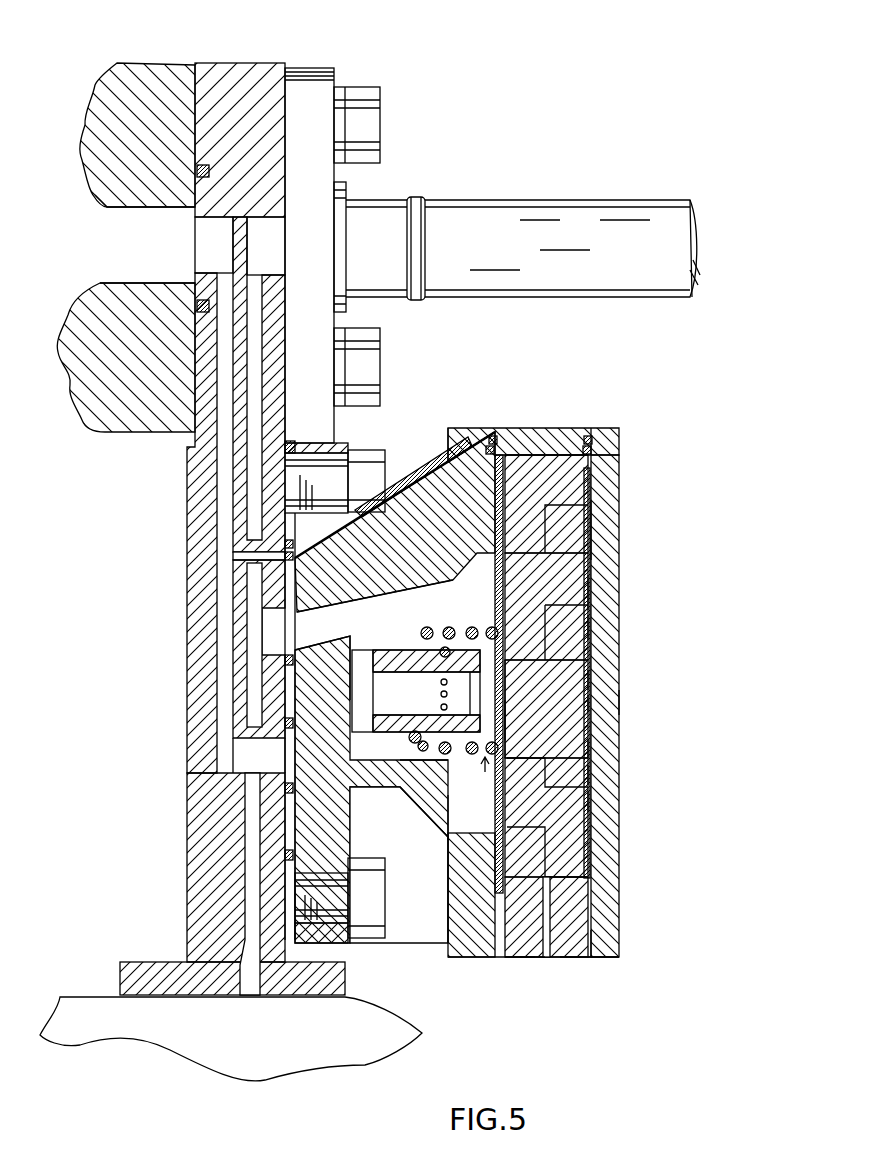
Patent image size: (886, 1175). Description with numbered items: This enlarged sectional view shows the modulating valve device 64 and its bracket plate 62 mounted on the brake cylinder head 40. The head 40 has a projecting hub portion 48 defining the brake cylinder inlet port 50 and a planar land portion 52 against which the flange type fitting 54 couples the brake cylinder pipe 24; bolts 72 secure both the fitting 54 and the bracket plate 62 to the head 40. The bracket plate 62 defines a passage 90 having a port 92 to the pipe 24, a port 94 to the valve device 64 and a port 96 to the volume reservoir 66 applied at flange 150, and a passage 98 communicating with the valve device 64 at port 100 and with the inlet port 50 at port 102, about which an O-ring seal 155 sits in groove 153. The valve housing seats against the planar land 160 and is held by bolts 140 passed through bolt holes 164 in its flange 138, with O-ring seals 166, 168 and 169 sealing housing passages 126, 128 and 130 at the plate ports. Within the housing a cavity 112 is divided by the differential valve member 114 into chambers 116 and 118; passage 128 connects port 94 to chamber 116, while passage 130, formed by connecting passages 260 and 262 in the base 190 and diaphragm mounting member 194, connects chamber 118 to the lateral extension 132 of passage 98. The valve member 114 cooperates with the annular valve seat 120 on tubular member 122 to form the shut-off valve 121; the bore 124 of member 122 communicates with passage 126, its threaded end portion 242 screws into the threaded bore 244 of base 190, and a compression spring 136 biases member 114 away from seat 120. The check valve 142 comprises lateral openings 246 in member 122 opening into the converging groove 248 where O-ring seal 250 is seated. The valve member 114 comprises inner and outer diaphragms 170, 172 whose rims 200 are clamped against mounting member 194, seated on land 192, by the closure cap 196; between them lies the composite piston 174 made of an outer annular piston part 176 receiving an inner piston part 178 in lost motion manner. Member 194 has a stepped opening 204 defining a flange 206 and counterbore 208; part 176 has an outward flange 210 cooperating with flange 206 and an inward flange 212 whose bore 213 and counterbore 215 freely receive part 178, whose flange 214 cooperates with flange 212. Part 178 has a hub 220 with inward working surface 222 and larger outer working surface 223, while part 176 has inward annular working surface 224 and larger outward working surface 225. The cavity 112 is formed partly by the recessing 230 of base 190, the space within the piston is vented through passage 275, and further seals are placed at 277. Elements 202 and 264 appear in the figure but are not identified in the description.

The brake cylinder pipe 24 is at (590, 226).
The cylinder head 40 is at (75, 420).
The projecting hub portion 48 is at (160, 70).
The brake cylinder inlet port 50 is at (140, 283).
The planar land portion 52 is at (232, 115).
The flange type fitting 54 is at (332, 72).
The bracket plate 62 is at (305, 78).
The modulating valve device 64 is at (586, 661).
The volume reservoir 66 is at (145, 1022).
The bolts 72 is at (370, 122).
The passage 90 is at (262, 400).
The port 92 is at (278, 250).
The port 94 is at (257, 630).
The port 96 is at (234, 986).
The passage 98 is at (205, 478).
The port 100 is at (252, 793).
The port 102 is at (194, 234).
The cavity 112 is at (433, 578).
The differential valve member 114 is at (608, 866).
The chamber 116 is at (380, 540).
The chamber 118 is at (614, 538).
The annular valve seat 120 is at (505, 736).
The air flow shut-off valve 121 is at (485, 760).
The tubular member 122 is at (304, 804).
The bore 124 is at (300, 655).
The passage 126 is at (298, 755).
The passage 128 is at (382, 613).
The passage 130 is at (556, 454).
The lateral extension 132 is at (240, 556).
The compression spring 136 is at (452, 810).
The flange 138 is at (292, 447).
The bolts 140 is at (370, 492).
The check valve 142 is at (406, 790).
The flange 150 is at (128, 980).
The groove 153 is at (210, 168).
The O-ring seal 155 is at (96, 192).
The planar land 160 is at (284, 862).
The housing bolt holes 164 is at (340, 458).
The O-ring seal 166 is at (284, 790).
The O-ring seal 168 is at (286, 662).
The O-ring seal 169 is at (286, 545).
The inner diaphragm 170 is at (498, 878).
The outer diaphragm 172 is at (620, 706).
The composite piston 174 is at (584, 670).
The outer annular piston part 176 is at (556, 957).
The inner piston part 178 is at (596, 628).
The base 190 is at (382, 834).
The outwardly facing land 192 is at (518, 958).
The diaphragm mounting member 194 is at (588, 960).
The housing closure cap 196 is at (603, 944).
The rims 200 is at (522, 465).
The seal 202 is at (486, 434).
The stepped diameter opening 204 is at (584, 577).
The flange 206 is at (476, 452).
The counterbore 208 is at (588, 521).
The outwardly directed radial flange 210 is at (590, 553).
The inwardly directed radial flange 212 is at (525, 620).
The bore 213 is at (525, 844).
The outwardly directed radial flange 214 is at (598, 777).
The counterbore 215 is at (598, 803).
The hub portion 220 is at (590, 702).
The inwardly directed working surface 222 is at (590, 751).
The outer working surface 223 is at (598, 681).
The inwardly directed working surface 224 is at (456, 882).
The outwardly directed annular working surface 225 is at (590, 592).
The recessing 230 is at (452, 843).
The end portion 242 is at (284, 855).
The threaded bore 244 is at (284, 723).
The lateral openings 246 is at (440, 706).
The circumferential groove 248 is at (432, 775).
The O-ring seal 250 is at (558, 684).
The connecting passage 260 is at (464, 460).
The connecting passage 262 is at (590, 446).
The housing corner 264 is at (622, 456).
The passage 275 is at (528, 960).
The seals 277 is at (423, 636).